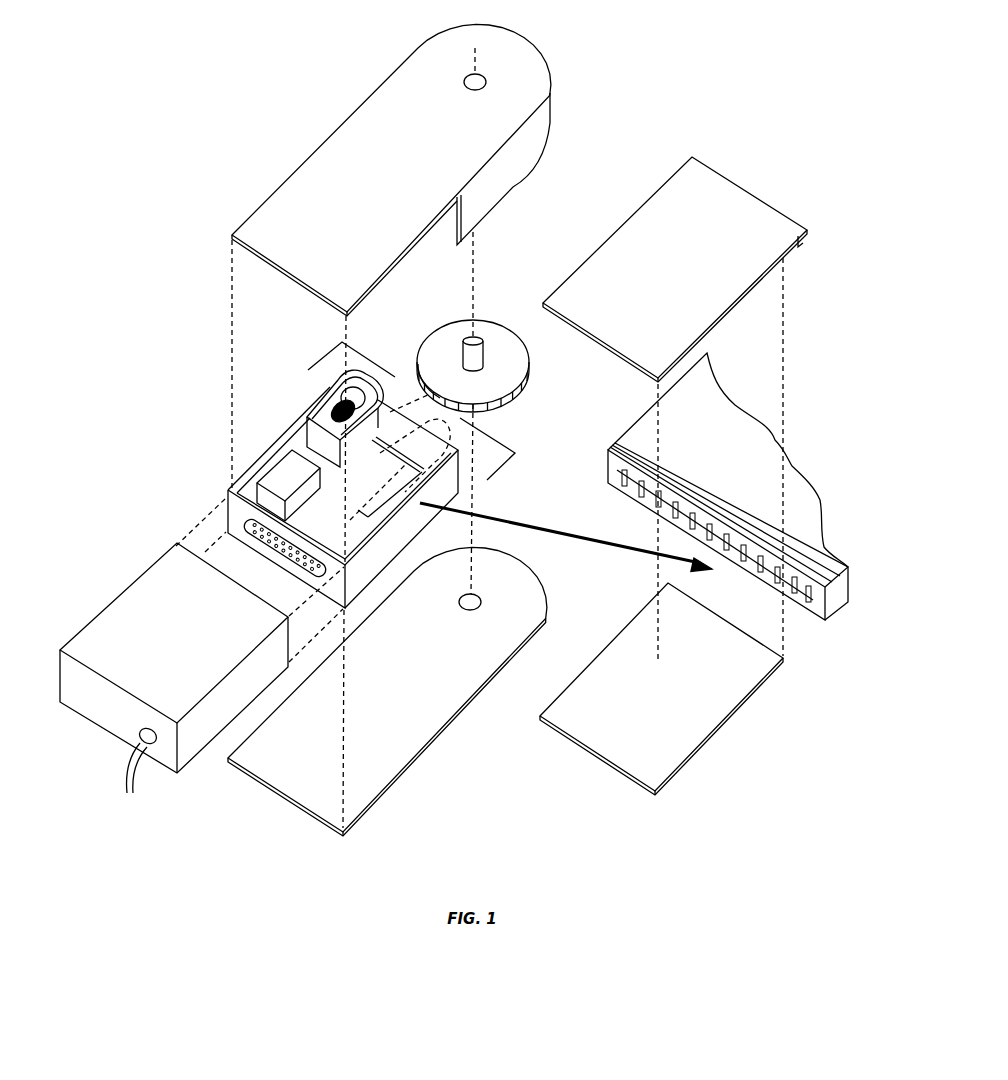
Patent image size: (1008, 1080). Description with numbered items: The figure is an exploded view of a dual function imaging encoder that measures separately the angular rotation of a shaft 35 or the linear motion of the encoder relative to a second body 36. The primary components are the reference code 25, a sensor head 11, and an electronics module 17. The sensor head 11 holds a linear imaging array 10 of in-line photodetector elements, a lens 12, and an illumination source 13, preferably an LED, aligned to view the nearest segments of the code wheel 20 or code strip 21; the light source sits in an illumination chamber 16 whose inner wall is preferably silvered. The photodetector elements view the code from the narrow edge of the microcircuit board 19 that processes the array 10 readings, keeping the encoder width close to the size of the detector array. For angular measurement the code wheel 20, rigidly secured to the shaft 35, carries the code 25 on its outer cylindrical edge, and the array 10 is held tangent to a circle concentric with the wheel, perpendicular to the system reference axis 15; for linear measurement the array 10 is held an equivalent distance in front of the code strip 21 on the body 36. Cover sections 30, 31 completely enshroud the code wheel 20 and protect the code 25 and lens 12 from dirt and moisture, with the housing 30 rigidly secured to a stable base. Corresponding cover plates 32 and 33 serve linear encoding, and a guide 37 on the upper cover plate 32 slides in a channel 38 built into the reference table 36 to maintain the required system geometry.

The linear imaging array 10 is at (392, 460).
The sensor head 11 is at (250, 468).
The lens 12 is at (462, 418).
The illumination source 13 is at (335, 398).
The system reference axis 15 is at (450, 383).
The illumination chamber 16 is at (308, 410).
The electronics module 17 is at (135, 600).
The microcircuit board 19 is at (356, 500).
The code wheel 20 is at (510, 363).
The code strip 21 is at (822, 600).
The reference code 25 is at (510, 405).
The cover section 30 is at (420, 67).
The cover section 31 is at (402, 745).
The upper cover plate 32 is at (688, 215).
The cover plate 33 is at (705, 710).
The shaft 35 is at (465, 337).
The second body 36 is at (640, 440).
The guide 37 is at (798, 247).
The channel 38 is at (692, 487).